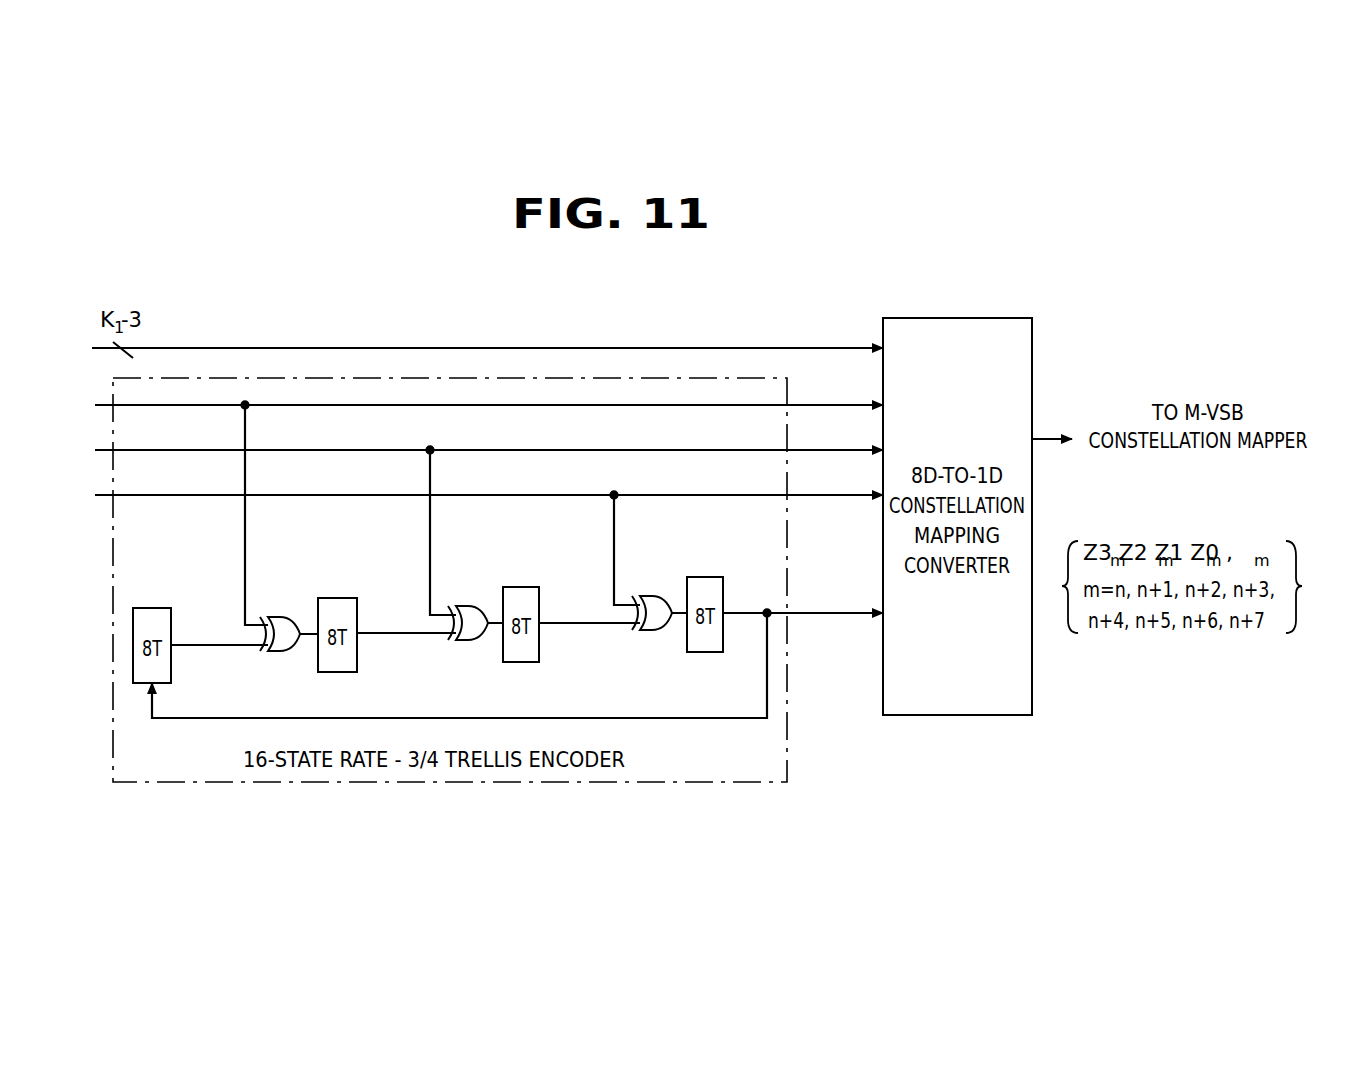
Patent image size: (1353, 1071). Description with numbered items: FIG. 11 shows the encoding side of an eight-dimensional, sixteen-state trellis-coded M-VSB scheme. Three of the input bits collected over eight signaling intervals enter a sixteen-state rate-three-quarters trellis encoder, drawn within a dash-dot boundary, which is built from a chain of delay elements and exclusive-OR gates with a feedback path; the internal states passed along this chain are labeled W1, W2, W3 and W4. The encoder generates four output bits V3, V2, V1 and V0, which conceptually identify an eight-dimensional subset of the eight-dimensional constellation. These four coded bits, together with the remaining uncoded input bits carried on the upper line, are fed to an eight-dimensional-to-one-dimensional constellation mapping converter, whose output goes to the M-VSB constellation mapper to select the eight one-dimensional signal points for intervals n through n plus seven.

The trellis encoder output bit V3 is at (489, 390).
The trellis encoder output bit V2 is at (489, 435).
The trellis encoder output bit V1 is at (489, 480).
The trellis encoder output bit V0 is at (803, 600).
The W1n signal line W1 is at (219, 628).
The W2n signal line W2 is at (406, 617).
The W3n signal line W3 is at (589, 605).
The W4n signal line W4 is at (749, 594).